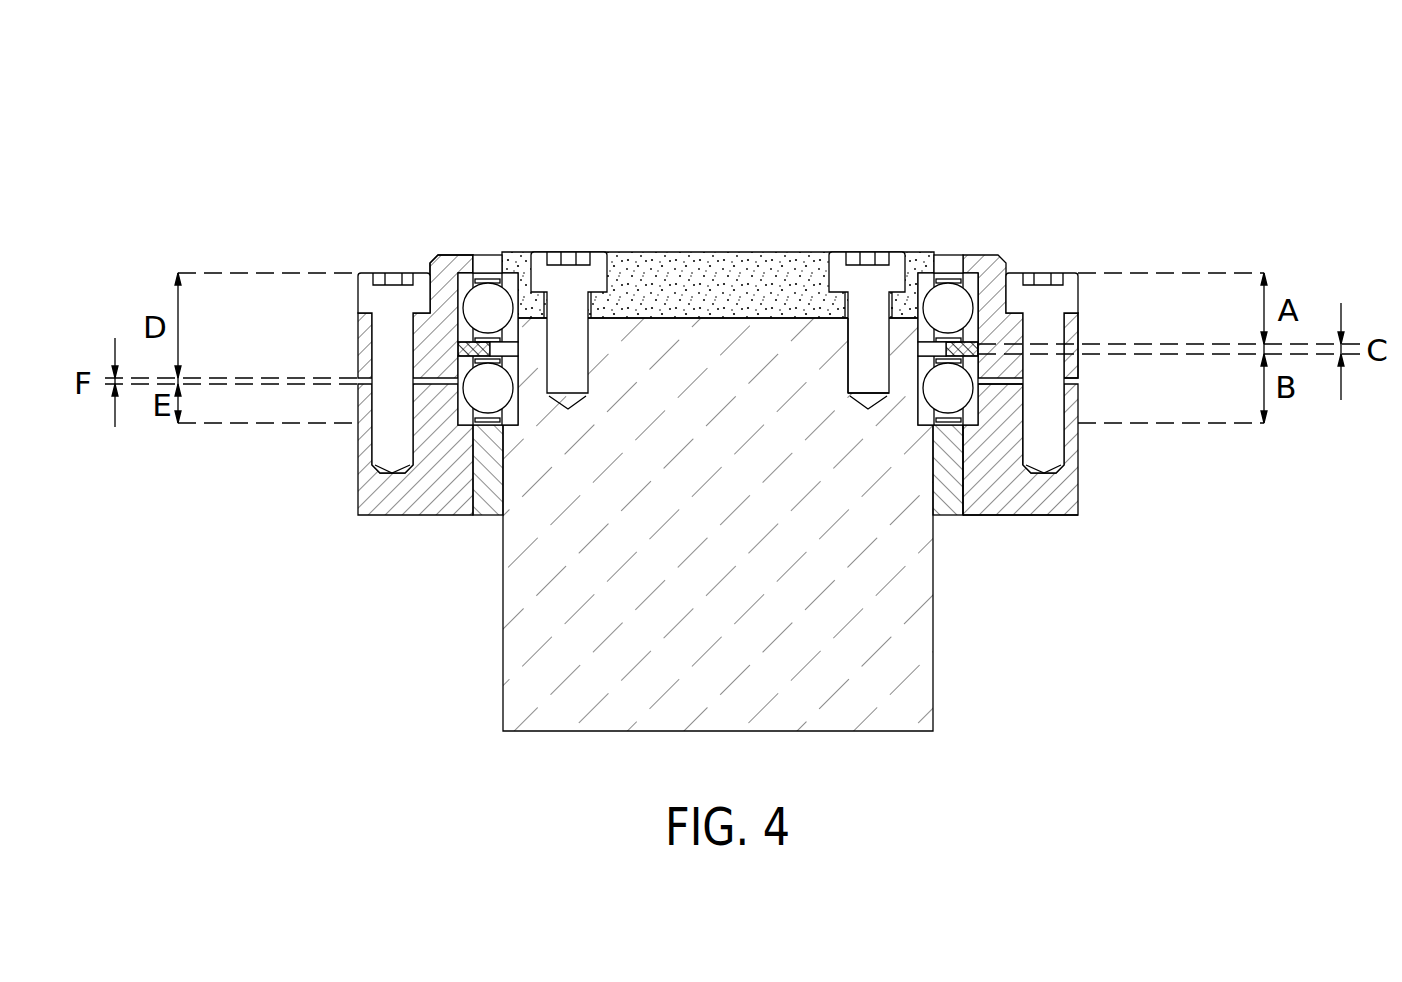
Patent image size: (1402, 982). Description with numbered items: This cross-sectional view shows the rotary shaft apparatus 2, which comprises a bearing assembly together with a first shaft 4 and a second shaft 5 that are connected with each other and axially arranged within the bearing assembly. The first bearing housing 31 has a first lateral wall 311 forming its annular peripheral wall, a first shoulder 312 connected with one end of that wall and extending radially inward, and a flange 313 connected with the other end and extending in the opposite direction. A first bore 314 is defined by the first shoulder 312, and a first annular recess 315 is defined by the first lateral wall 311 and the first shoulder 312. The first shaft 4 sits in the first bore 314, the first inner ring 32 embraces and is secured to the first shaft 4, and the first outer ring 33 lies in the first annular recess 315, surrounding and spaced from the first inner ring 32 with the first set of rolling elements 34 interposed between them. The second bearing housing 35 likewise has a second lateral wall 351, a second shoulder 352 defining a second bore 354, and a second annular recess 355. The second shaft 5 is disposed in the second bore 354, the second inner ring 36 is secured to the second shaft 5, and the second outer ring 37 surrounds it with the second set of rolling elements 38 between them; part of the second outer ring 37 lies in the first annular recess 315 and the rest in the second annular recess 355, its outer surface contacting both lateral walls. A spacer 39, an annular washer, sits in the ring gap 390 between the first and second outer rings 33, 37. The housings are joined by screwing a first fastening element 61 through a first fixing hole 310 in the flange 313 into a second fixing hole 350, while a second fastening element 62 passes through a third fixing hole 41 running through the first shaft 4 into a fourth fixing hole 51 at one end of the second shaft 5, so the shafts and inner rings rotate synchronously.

The rotary shaft apparatus 2 is at (1334, 107).
The first shaft 4 is at (690, 272).
The second shaft 5 is at (872, 722).
The first bearing housing 31 is at (432, 283).
The first inner ring 32 is at (495, 300).
The first outer ring 33 is at (452, 285).
The first set of rolling elements 34 is at (484, 270).
The second bearing housing 35 is at (400, 497).
The second inner ring 36 is at (505, 428).
The second outer ring 37 is at (380, 468).
The second set of rolling elements 38 is at (488, 440).
The spacer 39 is at (468, 349).
The third fixing hole 41 is at (840, 340).
The fourth fixing hole 51 is at (832, 332).
The first fastening element 61 is at (1056, 290).
The second fastening element 62 is at (868, 282).
The first fixing hole 310 is at (1075, 324).
The first lateral wall 311 is at (988, 300).
The first shoulder 312 is at (948, 298).
The flange 313 is at (1073, 362).
The first bore 314 is at (934, 262).
The first annular recess 315 is at (979, 295).
The second fixing hole 350 is at (1066, 428).
The second lateral wall 351 is at (1048, 513).
The second shoulder 352 is at (972, 480).
The second bore 354 is at (953, 440).
The second annular recess 355 is at (1010, 450).
The ring gap 390 is at (558, 290).